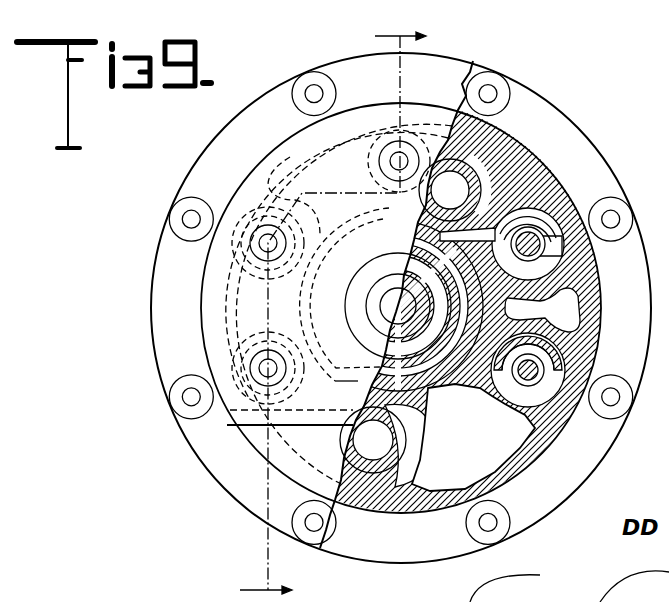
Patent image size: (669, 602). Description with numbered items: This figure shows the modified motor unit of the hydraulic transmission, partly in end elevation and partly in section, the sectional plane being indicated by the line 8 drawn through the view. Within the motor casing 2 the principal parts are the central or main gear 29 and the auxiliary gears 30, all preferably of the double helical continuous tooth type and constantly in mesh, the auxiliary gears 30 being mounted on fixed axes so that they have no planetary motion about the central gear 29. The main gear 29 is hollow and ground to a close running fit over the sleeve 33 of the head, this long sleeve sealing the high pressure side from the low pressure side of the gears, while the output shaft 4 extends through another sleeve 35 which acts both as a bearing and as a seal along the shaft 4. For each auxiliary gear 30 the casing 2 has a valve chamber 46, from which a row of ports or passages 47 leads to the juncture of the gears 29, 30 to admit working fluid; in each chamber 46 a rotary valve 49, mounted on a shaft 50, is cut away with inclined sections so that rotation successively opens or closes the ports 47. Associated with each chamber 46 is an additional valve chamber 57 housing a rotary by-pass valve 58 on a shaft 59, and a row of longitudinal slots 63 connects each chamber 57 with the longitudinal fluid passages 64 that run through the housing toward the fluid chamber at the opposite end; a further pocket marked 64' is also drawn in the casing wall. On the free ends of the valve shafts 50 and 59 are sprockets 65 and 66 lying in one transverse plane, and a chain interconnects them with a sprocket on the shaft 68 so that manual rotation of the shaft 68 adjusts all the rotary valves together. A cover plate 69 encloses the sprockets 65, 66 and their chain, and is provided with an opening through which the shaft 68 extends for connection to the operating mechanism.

The motor casing 2 is at (520, 186).
The output shaft 4 is at (390, 306).
The section line 8— 8 is at (342, 314).
The central or main gear 29 is at (452, 338).
The auxiliary gear 30 is at (415, 320).
The sleeve 33 is at (447, 278).
The sleeve 35 is at (464, 304).
The valve chamber 46 is at (532, 254).
The ports or passages 47 is at (478, 240).
The rotary valve 49 is at (528, 229).
The shaft 50 is at (533, 255).
The valve chamber 57 is at (552, 385).
The rotary valve 58 is at (512, 390).
The shaft 59 is at (560, 354).
The longitudinal slots 63 is at (500, 412).
The longitudinal fluid passages 64 is at (349, 304).
The casing pocket 64' is at (372, 310).
The sprocket 65 is at (215, 365).
The sprocket 66 is at (222, 263).
The shaft 68 is at (392, 160).
The cover plate 69 is at (292, 420).